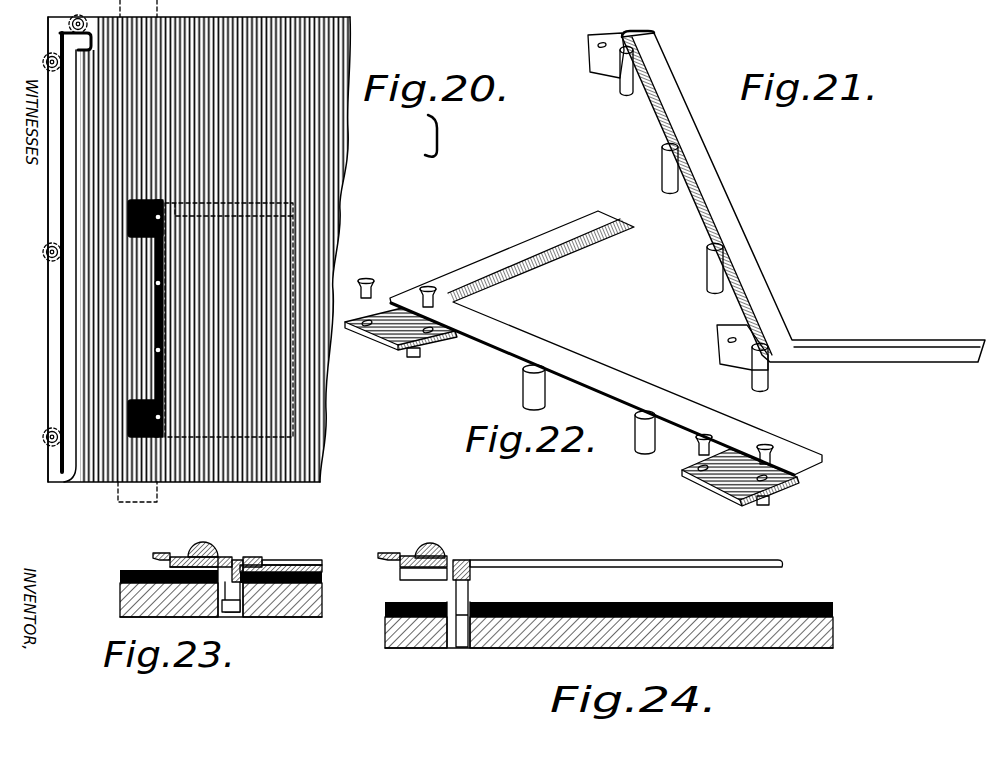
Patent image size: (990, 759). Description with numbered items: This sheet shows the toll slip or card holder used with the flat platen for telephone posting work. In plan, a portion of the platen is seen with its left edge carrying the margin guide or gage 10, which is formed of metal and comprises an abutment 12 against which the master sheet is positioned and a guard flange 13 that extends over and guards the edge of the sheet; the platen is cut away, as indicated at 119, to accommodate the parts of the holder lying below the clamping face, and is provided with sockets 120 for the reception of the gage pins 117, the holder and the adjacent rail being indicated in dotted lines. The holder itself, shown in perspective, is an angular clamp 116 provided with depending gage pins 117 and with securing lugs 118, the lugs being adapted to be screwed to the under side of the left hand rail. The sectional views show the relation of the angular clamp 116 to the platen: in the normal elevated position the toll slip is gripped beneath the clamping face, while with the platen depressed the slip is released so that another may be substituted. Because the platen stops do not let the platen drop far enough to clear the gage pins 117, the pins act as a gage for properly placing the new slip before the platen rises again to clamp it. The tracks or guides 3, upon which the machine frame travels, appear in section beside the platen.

In FIG. 23, the tracks or guides 3 is at (196, 542).
In FIG. 24, the tracks or guides 3 is at (430, 543).
In FIG. 20, the margin guide or gage 10 is at (62, 275).
In FIG. 20, the abutment 12 is at (56, 217).
In FIG. 20, the guard flange 13 is at (73, 313).
In FIG. 21, the angular clamp 116 is at (724, 181).
In FIG. 22, the angular clamp 116 is at (561, 350).
In FIG. 23, the angular clamp 116 is at (255, 560).
In FIG. 24, the angular clamp 116 is at (479, 559).
In FIG. 21, the gage pins 117 is at (707, 262).
In FIG. 22, the gage pins 117 is at (523, 390).
In FIG. 23, the gage pins 117 is at (245, 609).
In FIG. 24, the gage pins 117 is at (472, 586).
In FIG. 21, the securing lugs 118 is at (597, 68).
In FIG. 22, the securing lugs 118 is at (399, 353).
In FIG. 24, the securing lugs 118 is at (402, 572).
In FIG. 20, the cut-away portion of platen 119 is at (148, 432).
In FIG. 20, the sockets 120 is at (158, 285).